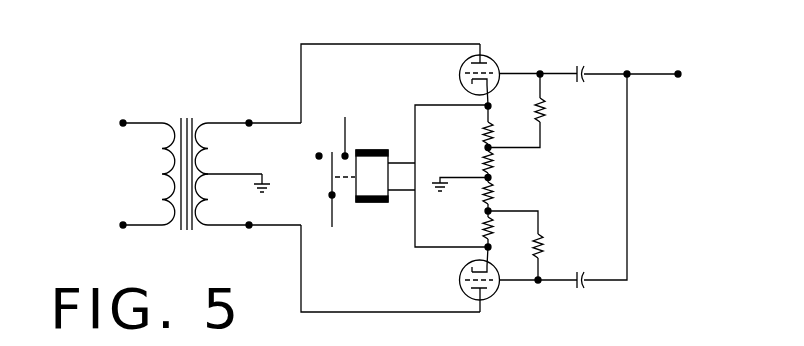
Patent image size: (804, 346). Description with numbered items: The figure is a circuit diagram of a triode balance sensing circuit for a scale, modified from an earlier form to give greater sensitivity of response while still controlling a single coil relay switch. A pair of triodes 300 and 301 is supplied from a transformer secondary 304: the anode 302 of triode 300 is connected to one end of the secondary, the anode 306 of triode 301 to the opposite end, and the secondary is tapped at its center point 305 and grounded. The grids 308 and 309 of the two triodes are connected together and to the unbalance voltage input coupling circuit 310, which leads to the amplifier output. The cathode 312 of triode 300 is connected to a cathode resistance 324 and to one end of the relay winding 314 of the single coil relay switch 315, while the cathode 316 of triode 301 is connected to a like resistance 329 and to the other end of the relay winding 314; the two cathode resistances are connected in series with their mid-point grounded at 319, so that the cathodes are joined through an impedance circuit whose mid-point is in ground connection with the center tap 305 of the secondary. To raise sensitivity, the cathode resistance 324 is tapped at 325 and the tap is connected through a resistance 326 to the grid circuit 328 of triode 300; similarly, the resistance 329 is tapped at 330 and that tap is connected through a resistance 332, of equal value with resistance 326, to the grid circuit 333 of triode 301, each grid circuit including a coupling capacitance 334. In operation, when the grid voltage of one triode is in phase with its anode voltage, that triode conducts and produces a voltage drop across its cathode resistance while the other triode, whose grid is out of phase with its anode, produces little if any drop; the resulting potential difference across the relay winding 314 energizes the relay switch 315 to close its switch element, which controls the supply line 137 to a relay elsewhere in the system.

The supply line 137 is at (353, 97).
The triode 300 is at (473, 69).
The triode 301 is at (471, 291).
The anode 302 is at (466, 54).
The transformer secondary 304 is at (200, 162).
The center tap 305 is at (225, 178).
The anode 306 is at (472, 292).
The grid 308 is at (462, 79).
The grid 309 is at (462, 282).
The unbalance voltage input coupling circuit 310 is at (653, 80).
The cathode 312 is at (472, 92).
The relay winding 314 is at (362, 150).
The single coil relay switch 315 is at (385, 203).
The cathode 316 is at (468, 262).
The ground 319 is at (451, 183).
The cathode resistance 324 is at (483, 130).
The tap 325 is at (483, 146).
The resistance 326 is at (551, 113).
The grid circuit 328 is at (548, 72).
The resistance 329 is at (498, 190).
The tap 330 is at (483, 214).
The resistance 332 is at (546, 243).
The grid circuit 333 is at (553, 289).
The coupling capacitance 334 is at (588, 68).